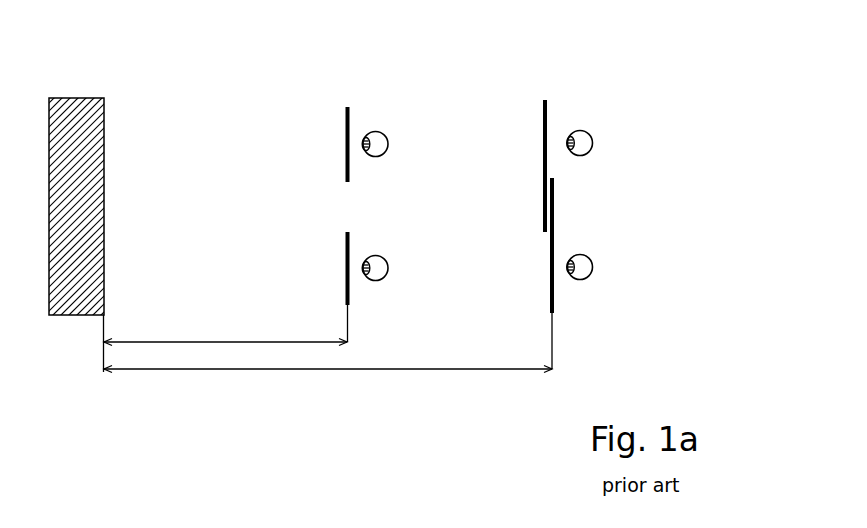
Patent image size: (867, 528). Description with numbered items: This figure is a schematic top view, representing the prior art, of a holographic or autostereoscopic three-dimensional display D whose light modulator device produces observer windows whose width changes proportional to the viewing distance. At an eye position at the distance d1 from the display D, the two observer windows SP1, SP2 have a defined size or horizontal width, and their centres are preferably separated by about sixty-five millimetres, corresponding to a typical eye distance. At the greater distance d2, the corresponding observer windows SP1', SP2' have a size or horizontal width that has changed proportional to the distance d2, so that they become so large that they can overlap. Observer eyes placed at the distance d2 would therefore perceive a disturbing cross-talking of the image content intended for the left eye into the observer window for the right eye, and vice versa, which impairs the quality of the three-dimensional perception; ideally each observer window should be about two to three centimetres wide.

The display D is at (159, 234).
The observer window SP1 is at (374, 287).
The observer window SP2 is at (359, 126).
The observer window SP1' is at (583, 273).
The observer window SP2' is at (553, 151).
The distance d1 is at (225, 332).
The distance d2 is at (328, 359).